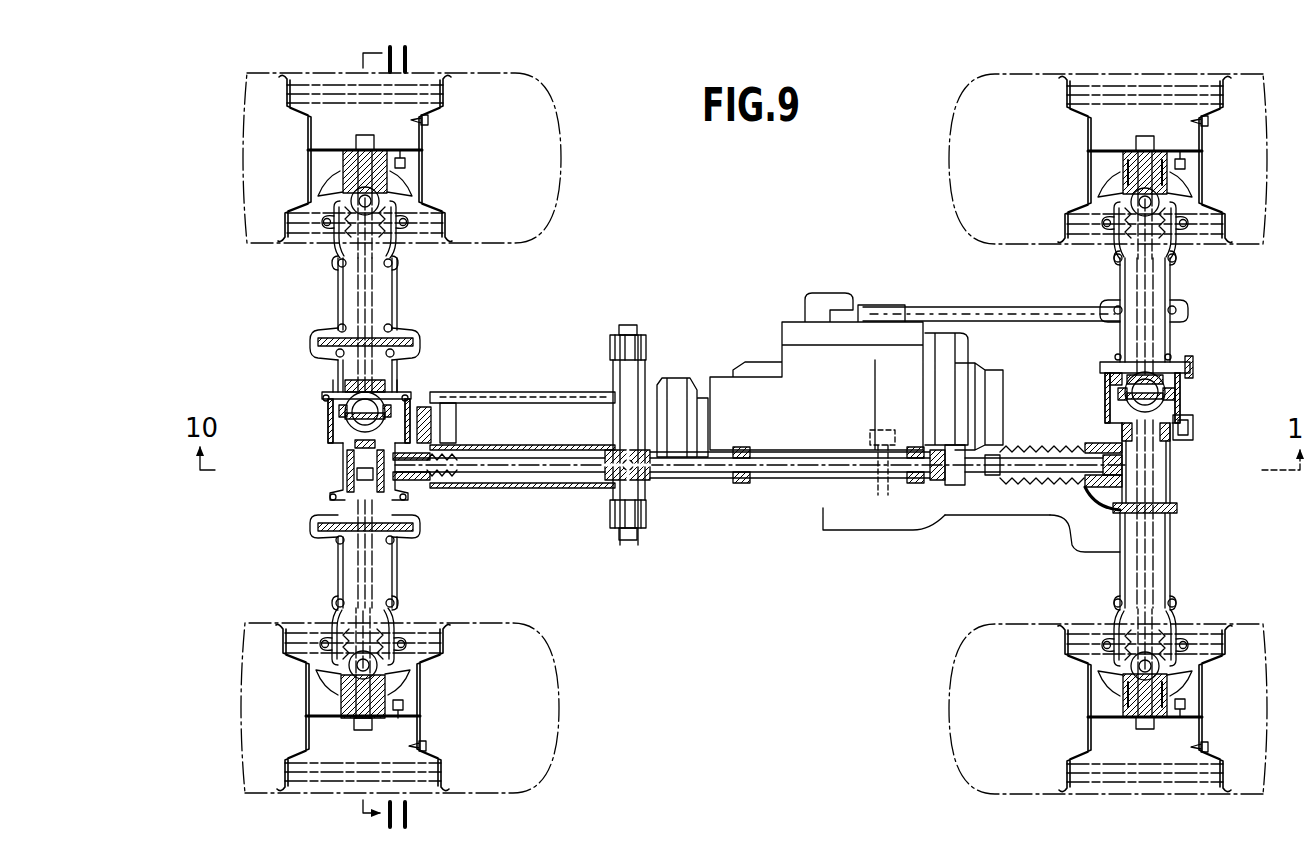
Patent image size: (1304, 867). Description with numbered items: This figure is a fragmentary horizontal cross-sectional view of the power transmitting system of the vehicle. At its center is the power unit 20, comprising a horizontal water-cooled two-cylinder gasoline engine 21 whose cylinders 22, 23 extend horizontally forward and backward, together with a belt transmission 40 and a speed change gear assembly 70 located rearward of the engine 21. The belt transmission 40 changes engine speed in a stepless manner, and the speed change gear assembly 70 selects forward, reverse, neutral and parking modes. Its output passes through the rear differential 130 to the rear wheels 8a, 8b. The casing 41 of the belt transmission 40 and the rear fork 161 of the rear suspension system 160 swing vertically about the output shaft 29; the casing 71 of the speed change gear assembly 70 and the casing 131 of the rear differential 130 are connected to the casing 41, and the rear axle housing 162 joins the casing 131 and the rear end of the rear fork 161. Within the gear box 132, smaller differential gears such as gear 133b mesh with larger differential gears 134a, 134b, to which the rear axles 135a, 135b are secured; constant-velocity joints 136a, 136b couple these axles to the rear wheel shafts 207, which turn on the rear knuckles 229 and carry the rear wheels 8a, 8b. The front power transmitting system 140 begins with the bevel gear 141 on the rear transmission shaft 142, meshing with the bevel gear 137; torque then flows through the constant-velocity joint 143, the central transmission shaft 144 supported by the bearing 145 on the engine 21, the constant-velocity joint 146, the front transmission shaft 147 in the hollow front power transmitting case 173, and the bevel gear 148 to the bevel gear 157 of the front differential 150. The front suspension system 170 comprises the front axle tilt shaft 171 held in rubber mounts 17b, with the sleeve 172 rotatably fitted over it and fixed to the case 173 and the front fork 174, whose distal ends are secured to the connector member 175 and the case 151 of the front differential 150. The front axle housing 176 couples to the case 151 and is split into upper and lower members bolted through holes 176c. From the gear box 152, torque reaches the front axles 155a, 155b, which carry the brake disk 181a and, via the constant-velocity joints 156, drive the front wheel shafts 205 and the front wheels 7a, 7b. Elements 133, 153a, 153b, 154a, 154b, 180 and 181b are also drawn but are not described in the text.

The front wheel 7a is at (566, 182).
The front wheel 7b is at (558, 723).
The rear wheel 8a is at (950, 173).
The rear wheel 8b is at (950, 748).
The power unit 20 is at (832, 535).
The engine 21 is at (790, 370).
The cylinder 22 is at (676, 385).
The cylinder 23 is at (987, 405).
The output shaft 29 is at (872, 492).
The belt transmission 40 is at (948, 520).
The casing 41 is at (1032, 520).
The speed change gear assembly 70 is at (1100, 431).
The casing 71 is at (1104, 374).
The rear differential 130 is at (1202, 357).
The casing 131 is at (1193, 372).
The gear box 132 is at (1180, 383).
The bearing 133 is at (1157, 368).
The smaller differential gear 133b is at (1193, 438).
The larger differential gear 134a is at (1118, 384).
The larger differential gear 134b is at (1180, 404).
The rear axle 135a is at (1150, 287).
The rear axle 135b is at (1145, 573).
The constant-velocity joint 136a is at (1168, 228).
The constant-velocity joint 136b is at (1160, 636).
The bevel gear 137 is at (1172, 468).
The front power transmitting system 140 is at (815, 522).
The bevel gear 141 is at (1113, 505).
The rear transmission shaft 142 is at (1095, 488).
The constant-velocity joint 143 is at (945, 483).
The central transmission shaft 144 is at (790, 472).
The bearing 145 is at (738, 483).
The constant-velocity joint 146 is at (640, 482).
The front transmission shaft 147 is at (555, 470).
The bevel gear 148 is at (400, 482).
The front differential 150 is at (306, 397).
The case 151 is at (333, 398).
The gear box 152 is at (345, 408).
The bearing 153a is at (387, 390).
The bearing 153b is at (355, 465).
The bearing 154a is at (352, 440).
The bearing 154b is at (383, 410).
The front axle 155a is at (370, 284).
The front axle 155b is at (370, 578).
The constant-velocity joint 156 is at (340, 213).
The bevel gear 157 is at (357, 483).
The suspension system 160 is at (955, 300).
The rear fork 161 is at (998, 312).
The rear axle housing 162 is at (1123, 286).
The suspension system 170 is at (575, 312).
The front axle tilt shaft 171 is at (620, 415).
The sleeve 172 is at (620, 380).
The rubber mount 17b is at (613, 517).
The front power transmitting case 173 is at (545, 490).
The front fork 174 is at (535, 398).
The connector member 175 is at (447, 423).
The front axle housing 176 is at (345, 294).
The holes 176c is at (388, 324).
The upper flange 180 is at (303, 323).
The brake disk 181a is at (328, 341).
The lower flange plate 181b is at (322, 534).
The front wheel shaft 205 is at (388, 176).
The rear wheel shaft 207 is at (1150, 180).
The rear knuckle 229 is at (1128, 173).